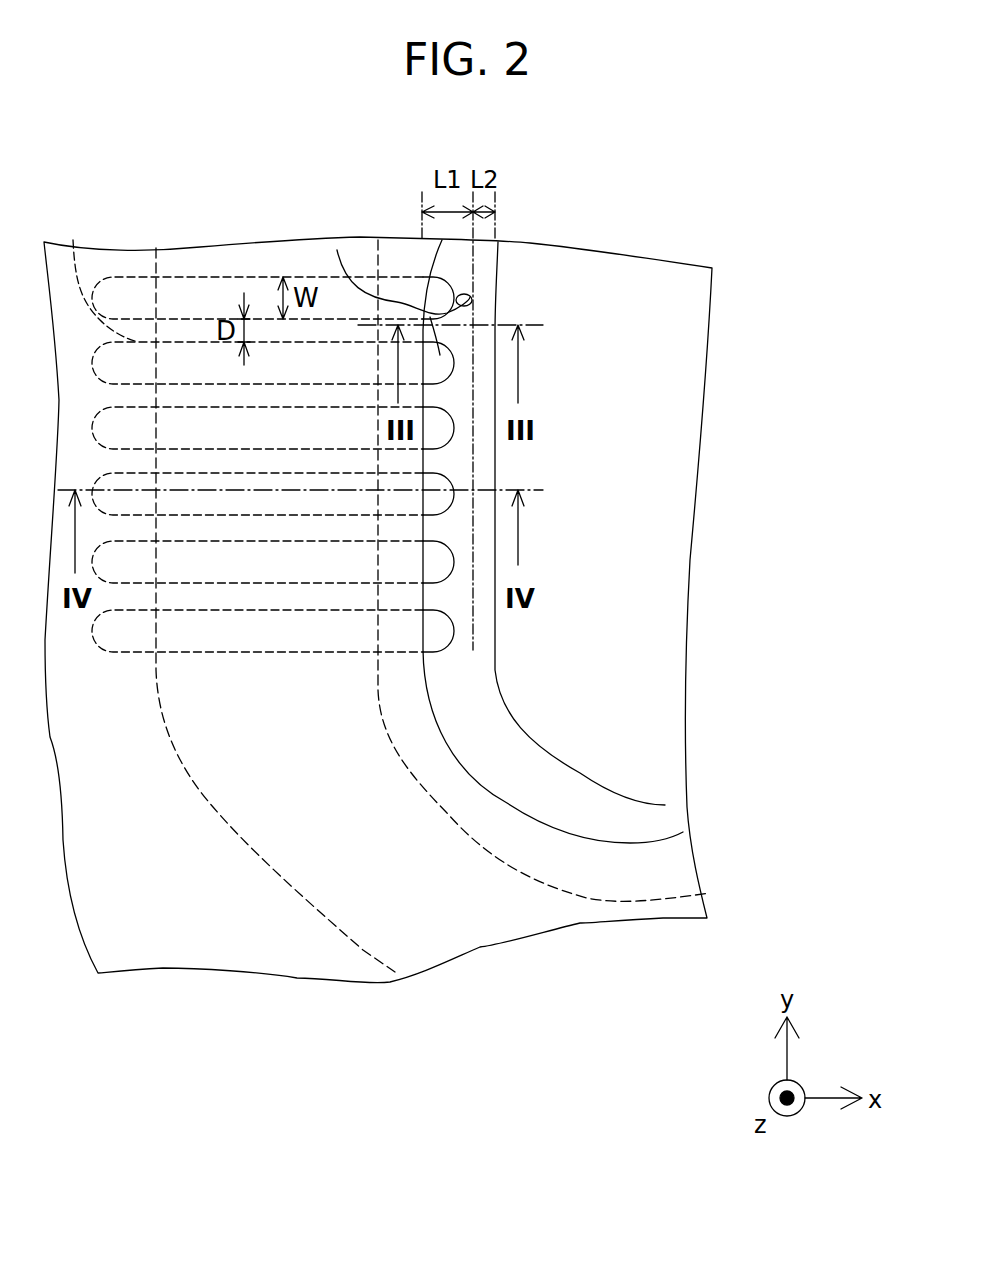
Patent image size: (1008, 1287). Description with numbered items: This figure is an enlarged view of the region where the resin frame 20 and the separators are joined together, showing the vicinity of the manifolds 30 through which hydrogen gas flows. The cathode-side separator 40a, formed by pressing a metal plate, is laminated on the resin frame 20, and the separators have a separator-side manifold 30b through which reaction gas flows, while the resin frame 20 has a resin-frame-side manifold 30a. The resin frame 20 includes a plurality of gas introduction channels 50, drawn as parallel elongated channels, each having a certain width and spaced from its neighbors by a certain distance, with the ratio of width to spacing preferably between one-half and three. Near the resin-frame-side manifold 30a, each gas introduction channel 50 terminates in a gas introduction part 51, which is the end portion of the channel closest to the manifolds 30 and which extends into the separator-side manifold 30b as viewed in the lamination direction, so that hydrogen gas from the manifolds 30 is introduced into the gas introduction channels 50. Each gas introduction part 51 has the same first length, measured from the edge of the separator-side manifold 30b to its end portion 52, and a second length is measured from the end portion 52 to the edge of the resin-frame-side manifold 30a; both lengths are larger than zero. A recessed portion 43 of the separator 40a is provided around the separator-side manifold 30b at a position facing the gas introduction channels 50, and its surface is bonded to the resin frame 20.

The resin frame 20 is at (492, 880).
The manifolds 30 is at (653, 541).
The resin-frame-side manifold 30a is at (665, 805).
The separator-side manifold 30b is at (795, 747).
The separator 40a is at (583, 880).
The recessed portion 43 is at (423, 945).
The gas introduction channel 50 is at (187, 275).
The gas introduction part 51 is at (440, 282).
The end portion 52 is at (466, 305).